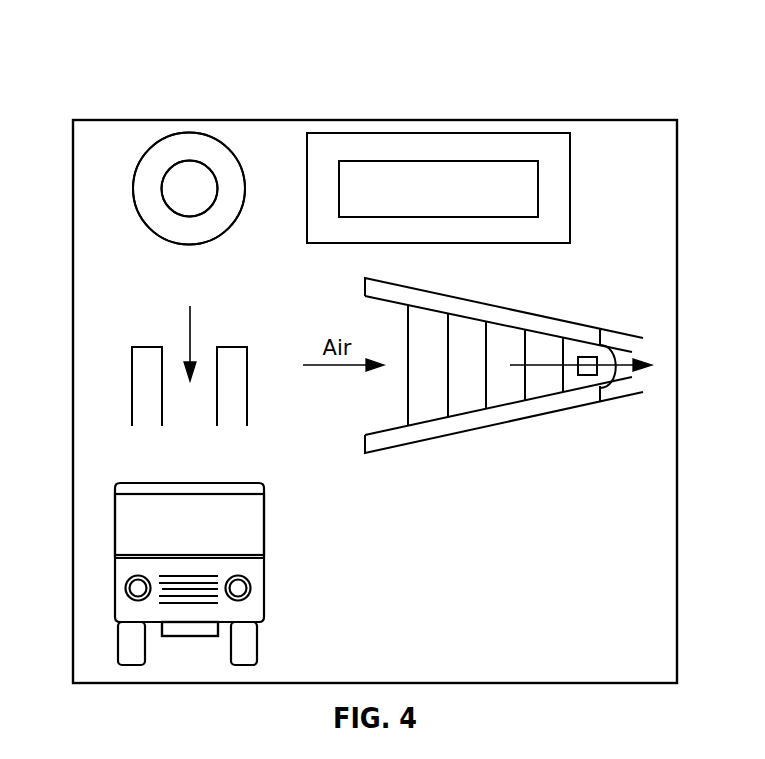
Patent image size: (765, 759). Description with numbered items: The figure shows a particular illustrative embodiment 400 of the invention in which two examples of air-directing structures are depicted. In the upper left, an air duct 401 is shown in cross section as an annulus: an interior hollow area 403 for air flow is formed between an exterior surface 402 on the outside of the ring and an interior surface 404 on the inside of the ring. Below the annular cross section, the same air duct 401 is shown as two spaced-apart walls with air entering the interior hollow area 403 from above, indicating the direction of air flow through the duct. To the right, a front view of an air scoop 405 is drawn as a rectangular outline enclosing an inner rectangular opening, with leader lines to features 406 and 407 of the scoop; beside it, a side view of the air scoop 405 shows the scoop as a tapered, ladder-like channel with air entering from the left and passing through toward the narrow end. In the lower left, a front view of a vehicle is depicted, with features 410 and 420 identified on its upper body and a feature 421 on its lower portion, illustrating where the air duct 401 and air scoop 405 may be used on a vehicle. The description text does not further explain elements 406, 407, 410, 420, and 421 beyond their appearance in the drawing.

The illustrative embodiment 400 is at (204, 60).
The air duct 401 is at (175, 227).
The exterior surface 402 is at (148, 146).
The interior hollow area 403 is at (176, 182).
The interior surface 404 is at (206, 160).
The air scoop 405 is at (570, 187).
The inner chamber 406 is at (407, 185).
The chamber wall 407 is at (503, 159).
The vehicle 410 is at (253, 488).
The vehicle cab 420 is at (264, 525).
The sensor mount 421 is at (207, 629).